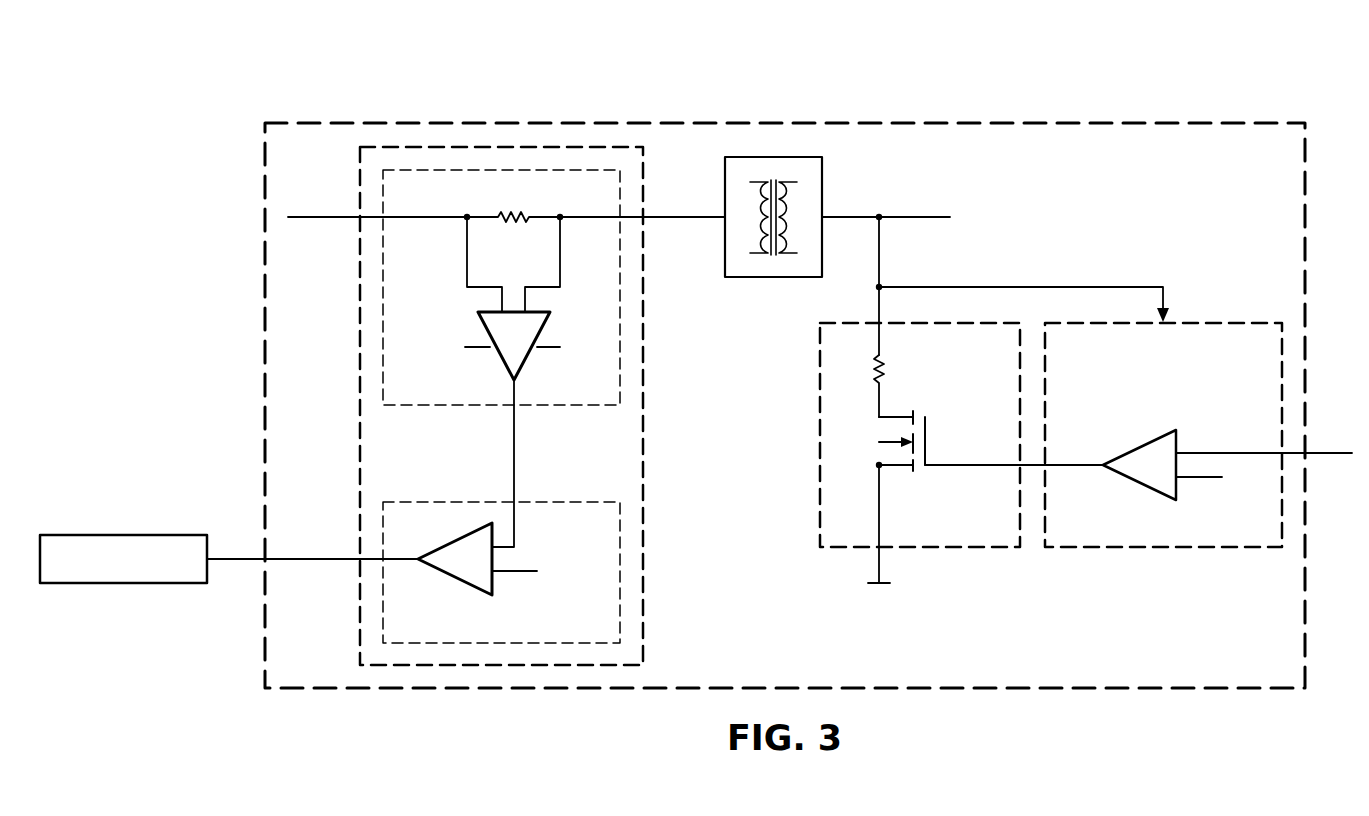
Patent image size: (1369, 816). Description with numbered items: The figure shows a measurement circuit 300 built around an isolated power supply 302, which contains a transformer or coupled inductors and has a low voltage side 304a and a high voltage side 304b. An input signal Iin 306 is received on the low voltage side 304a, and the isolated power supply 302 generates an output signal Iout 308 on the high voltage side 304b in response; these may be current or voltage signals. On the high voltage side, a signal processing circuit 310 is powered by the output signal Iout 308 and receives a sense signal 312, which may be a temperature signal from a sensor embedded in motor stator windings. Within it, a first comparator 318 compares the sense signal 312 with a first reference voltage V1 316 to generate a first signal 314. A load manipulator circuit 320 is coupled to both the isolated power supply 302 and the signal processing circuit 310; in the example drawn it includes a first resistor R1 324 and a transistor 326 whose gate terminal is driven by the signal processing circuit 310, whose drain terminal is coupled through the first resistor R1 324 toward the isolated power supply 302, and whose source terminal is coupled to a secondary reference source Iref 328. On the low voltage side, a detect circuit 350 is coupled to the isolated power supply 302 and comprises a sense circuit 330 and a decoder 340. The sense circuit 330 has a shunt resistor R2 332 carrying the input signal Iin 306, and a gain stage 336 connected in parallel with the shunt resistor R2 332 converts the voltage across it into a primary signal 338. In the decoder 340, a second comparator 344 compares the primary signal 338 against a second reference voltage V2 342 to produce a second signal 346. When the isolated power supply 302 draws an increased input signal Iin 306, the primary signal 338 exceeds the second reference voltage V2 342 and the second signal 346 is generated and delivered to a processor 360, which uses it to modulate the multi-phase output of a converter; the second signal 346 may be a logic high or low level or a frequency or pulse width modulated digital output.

The measurement circuit 300 is at (252, 403).
The isolated power supply 302 is at (773, 280).
The low voltage side 304a is at (698, 214).
The high voltage side 304b is at (852, 214).
The input signal Iin 306 is at (323, 222).
The output signal Iout 308 is at (914, 221).
The signal processing circuit 310 is at (1193, 560).
The sense signal 312 is at (1328, 455).
The first signal 314 is at (985, 470).
The first reference voltage V1 316 is at (1197, 479).
The first comparator 318 is at (1138, 487).
The load manipulator circuit 320 is at (937, 560).
The first resistor R1 324 is at (888, 371).
The transistor 326 is at (931, 441).
The secondary reference source Iref 328 is at (877, 565).
The sense circuit 330 is at (468, 415).
The shunt resistor R2 332 is at (514, 226).
The gain stage 336 is at (480, 330).
The primary signal 338 is at (516, 512).
The decoder 340 is at (563, 490).
The second reference voltage V2 342 is at (513, 575).
The second comparator 344 is at (455, 580).
The second signal 346 is at (243, 562).
The detect circuit 350 is at (658, 402).
The processor 360 is at (122, 586).